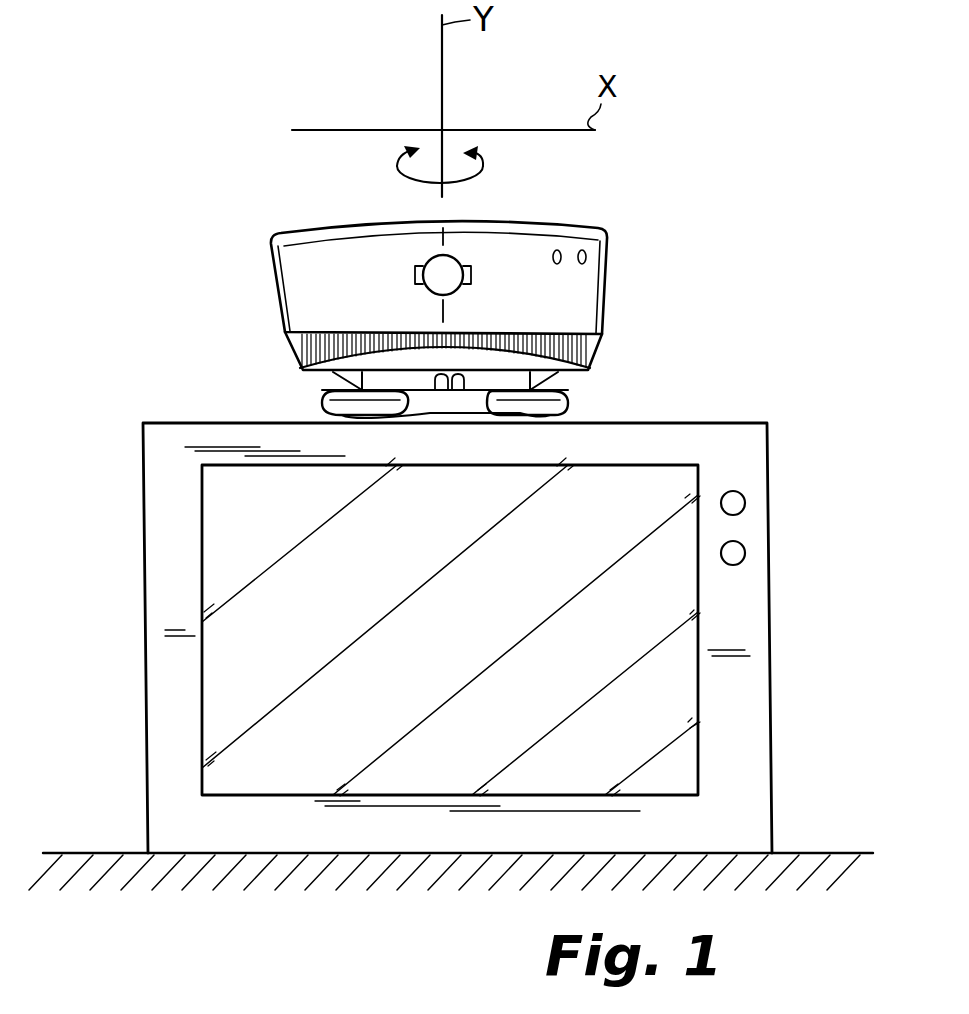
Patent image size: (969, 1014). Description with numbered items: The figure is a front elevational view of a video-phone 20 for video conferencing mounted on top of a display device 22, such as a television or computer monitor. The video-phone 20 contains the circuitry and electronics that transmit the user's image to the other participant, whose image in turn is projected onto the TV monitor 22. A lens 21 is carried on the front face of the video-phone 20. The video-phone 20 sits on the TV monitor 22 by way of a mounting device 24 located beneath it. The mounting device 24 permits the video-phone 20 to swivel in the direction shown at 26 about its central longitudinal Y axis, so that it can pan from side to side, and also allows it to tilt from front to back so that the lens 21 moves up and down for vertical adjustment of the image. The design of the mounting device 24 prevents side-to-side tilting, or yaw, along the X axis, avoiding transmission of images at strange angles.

The video-phone 20 is at (642, 253).
The lens 21 is at (460, 288).
The display device 22 is at (790, 555).
The mounting device 24 is at (298, 400).
The swivel direction 26 is at (407, 178).